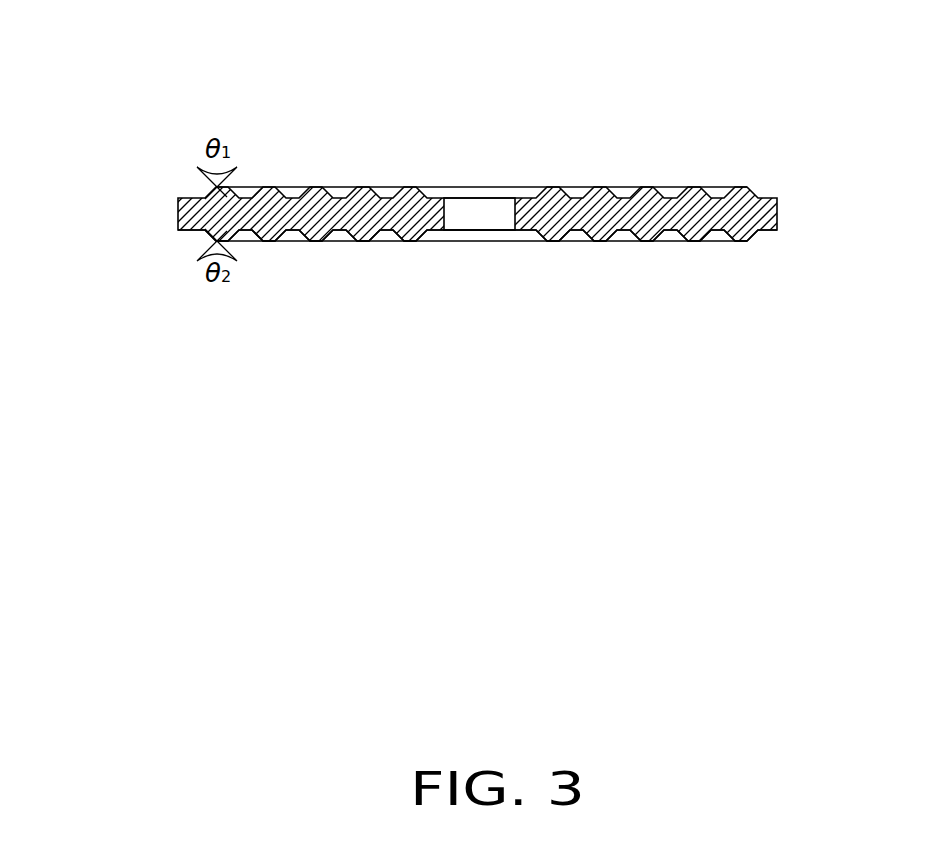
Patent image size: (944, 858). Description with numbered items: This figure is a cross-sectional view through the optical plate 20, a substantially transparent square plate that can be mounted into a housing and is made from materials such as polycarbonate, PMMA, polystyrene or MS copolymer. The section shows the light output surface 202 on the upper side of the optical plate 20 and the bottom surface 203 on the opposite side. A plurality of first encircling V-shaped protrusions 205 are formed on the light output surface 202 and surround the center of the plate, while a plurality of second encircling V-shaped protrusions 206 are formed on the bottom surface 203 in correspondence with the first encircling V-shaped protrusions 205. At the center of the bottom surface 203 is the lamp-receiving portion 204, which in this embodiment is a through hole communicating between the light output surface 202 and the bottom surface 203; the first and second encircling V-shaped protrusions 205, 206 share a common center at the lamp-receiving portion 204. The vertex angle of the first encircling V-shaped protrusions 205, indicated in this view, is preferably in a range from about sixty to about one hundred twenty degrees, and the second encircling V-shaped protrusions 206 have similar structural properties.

The optical plate 20 is at (170, 117).
The light output surface 202 is at (620, 195).
The bottom surface 203 is at (385, 231).
The lamp-receiving portion 204 is at (476, 214).
The first encircling V-shaped protrusions 205 is at (740, 187).
The second encircling V-shaped protrusions 206 is at (741, 239).